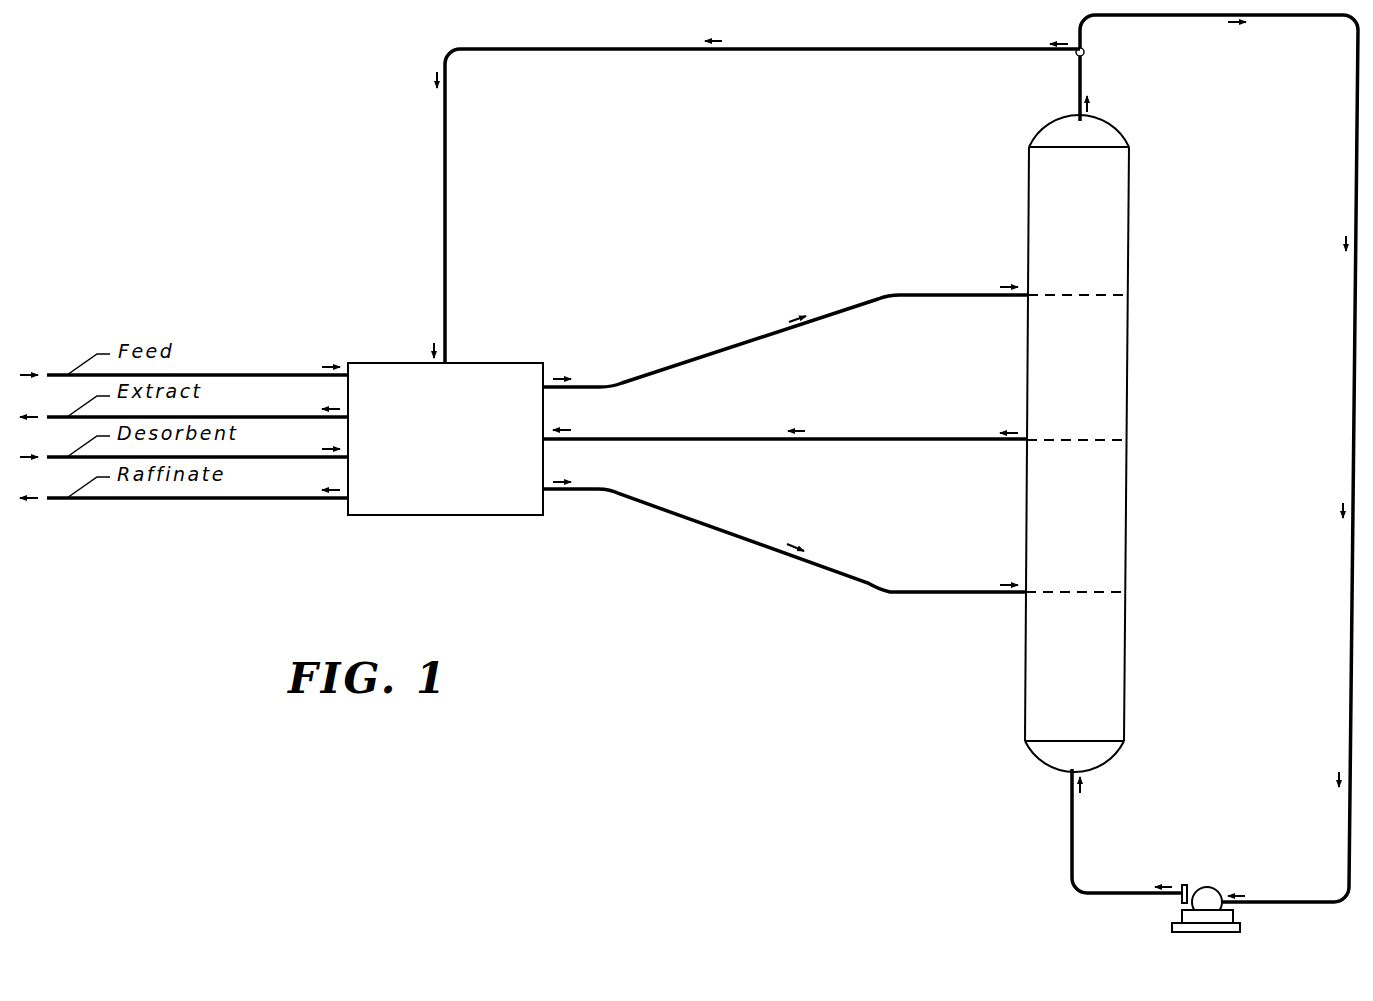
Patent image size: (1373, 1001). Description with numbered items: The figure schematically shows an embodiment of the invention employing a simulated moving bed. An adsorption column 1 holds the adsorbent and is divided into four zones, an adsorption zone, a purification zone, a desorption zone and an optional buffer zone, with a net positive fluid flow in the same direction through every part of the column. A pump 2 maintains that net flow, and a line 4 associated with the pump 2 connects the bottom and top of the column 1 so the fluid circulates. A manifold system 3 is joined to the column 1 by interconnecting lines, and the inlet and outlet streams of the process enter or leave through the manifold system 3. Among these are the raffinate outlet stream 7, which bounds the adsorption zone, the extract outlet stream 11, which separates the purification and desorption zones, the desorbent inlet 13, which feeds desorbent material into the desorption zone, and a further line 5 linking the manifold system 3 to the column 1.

The adsorption column 1 is at (1140, 245).
The pump 2 is at (1215, 887).
The manifold system 3 is at (453, 518).
The line 4 is at (1202, 15).
The line 5 is at (997, 292).
The raffinate outlet stream 7 is at (1002, 47).
The extract outlet stream 11 is at (997, 437).
The desorbent inlet 13 is at (998, 588).